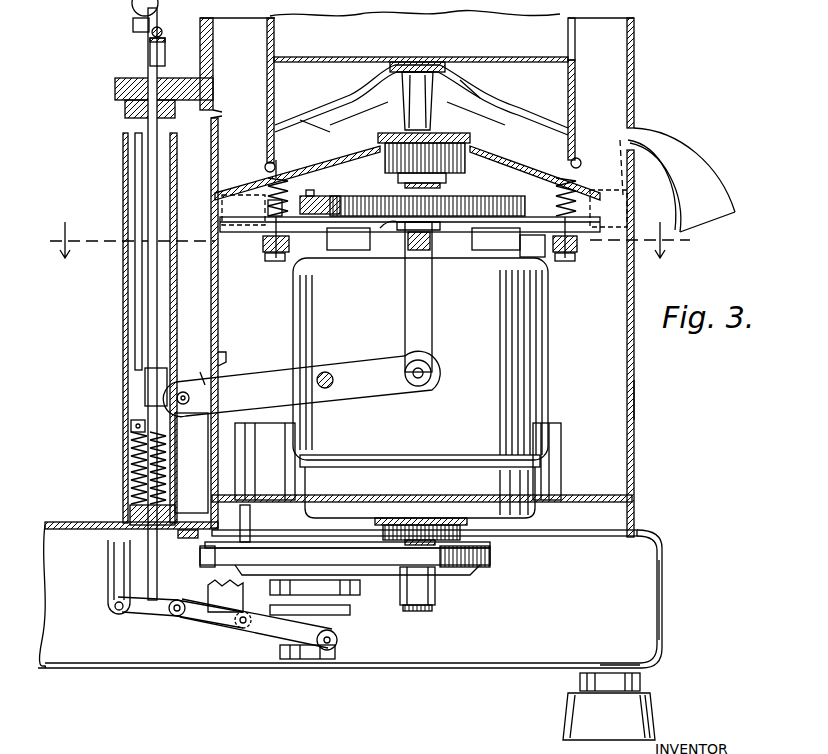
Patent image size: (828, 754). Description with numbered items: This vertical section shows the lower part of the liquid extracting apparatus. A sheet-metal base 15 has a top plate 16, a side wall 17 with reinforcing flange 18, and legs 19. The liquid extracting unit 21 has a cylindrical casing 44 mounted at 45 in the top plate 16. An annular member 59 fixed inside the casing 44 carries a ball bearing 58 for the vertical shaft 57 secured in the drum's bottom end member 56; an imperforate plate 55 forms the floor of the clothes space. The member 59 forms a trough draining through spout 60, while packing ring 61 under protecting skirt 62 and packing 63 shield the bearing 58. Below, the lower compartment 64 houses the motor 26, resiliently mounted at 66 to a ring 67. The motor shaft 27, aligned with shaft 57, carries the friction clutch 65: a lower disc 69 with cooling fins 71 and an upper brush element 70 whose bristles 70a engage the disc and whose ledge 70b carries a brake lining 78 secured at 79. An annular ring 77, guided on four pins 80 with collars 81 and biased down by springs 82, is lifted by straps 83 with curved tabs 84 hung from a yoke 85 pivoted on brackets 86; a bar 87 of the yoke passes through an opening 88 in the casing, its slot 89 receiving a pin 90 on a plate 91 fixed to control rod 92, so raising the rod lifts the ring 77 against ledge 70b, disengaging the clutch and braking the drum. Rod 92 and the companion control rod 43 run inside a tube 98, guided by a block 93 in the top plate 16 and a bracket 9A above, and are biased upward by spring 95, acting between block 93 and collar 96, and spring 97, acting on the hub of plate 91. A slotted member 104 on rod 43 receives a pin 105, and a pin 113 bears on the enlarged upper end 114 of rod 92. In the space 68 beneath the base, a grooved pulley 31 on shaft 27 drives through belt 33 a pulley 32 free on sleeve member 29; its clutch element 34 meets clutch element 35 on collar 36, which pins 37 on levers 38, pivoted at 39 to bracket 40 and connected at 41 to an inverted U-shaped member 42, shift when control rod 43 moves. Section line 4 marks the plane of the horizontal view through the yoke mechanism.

The section line 4- 4 is at (364, 240).
The bracket 9A is at (116, 89).
The base 15 is at (670, 533).
The top plate 16 is at (90, 522).
The vertical side wall 17 is at (663, 586).
The reinforcing flange 18 is at (617, 665).
The supporting legs 19 is at (642, 699).
The liquid extracting unit 21 is at (645, 404).
The motor 26 is at (547, 338).
The motor shaft 27 is at (417, 526).
The sleeve member 29 is at (292, 542).
The grooved pulley 31 is at (483, 566).
The grooved pulley 32 is at (244, 542).
The belt 33 is at (447, 575).
The clutch element 34 is at (360, 589).
The clutch element 35 is at (351, 610).
The collar 36 is at (338, 634).
The pins 37 is at (305, 660).
The levers 38 is at (186, 618).
The pivot 39 is at (240, 626).
The bracket 40 is at (225, 600).
The pivotal connection 41 is at (120, 612).
The inverted U-shaped member 42 is at (110, 570).
The control rod 43 is at (137, 335).
The casing 44 is at (213, 145).
The mounting 45 is at (643, 516).
The imperforate plate 55 is at (520, 58).
The bottom end member 56 is at (352, 100).
The vertical shaft 57 is at (420, 85).
The ball bearing 58 is at (465, 100).
The annular member 59 is at (232, 192).
The discharge spout 60 is at (690, 157).
The packing material 61 is at (342, 120).
The protecting plate 62 is at (345, 144).
The packing material 63 is at (455, 170).
The lower compartment 64 is at (256, 297).
The friction clutch 65 is at (325, 232).
The mounts 66 is at (250, 445).
The ring 67 is at (570, 494).
The space 68 is at (576, 590).
The lower clutch element 69 is at (542, 256).
The upper clutch element 70 is at (324, 212).
The bristles 70a is at (490, 240).
The ledge 70b is at (276, 198).
The fins 71 is at (335, 252).
The annular plate 77 is at (268, 232).
The brake lining 78 is at (325, 198).
The securing means 79 is at (310, 190).
The pins 80 is at (278, 253).
The collars 81 is at (264, 252).
The helical coil spring 82 is at (270, 200).
The straps 83 is at (433, 358).
The tabs 84 is at (398, 228).
The yoke 85 is at (385, 366).
The brackets 86 is at (282, 372).
The bar 87 is at (197, 367).
The opening 88 is at (226, 360).
The slot 89 is at (188, 412).
The pin 90 is at (177, 398).
The plate 91 is at (152, 385).
The control rod 92 is at (150, 297).
The block 93 is at (130, 516).
The helical coil spring 95 is at (133, 449).
The collar 96 is at (131, 427).
The helical coil spring 97 is at (162, 464).
The tube 98 is at (123, 265).
The slotted member 104 is at (133, 8).
The pin 105 is at (140, 20).
The pin 113 is at (160, 35).
The enlarged end 114 is at (152, 53).